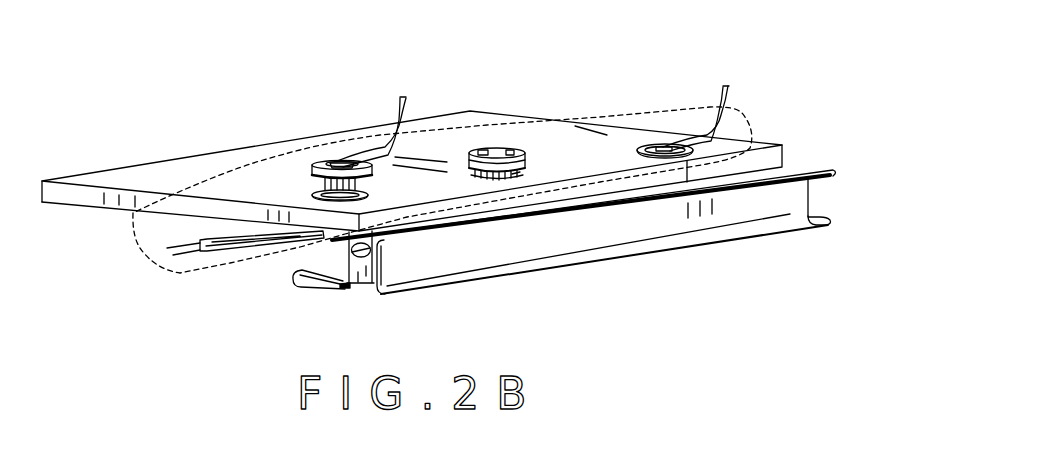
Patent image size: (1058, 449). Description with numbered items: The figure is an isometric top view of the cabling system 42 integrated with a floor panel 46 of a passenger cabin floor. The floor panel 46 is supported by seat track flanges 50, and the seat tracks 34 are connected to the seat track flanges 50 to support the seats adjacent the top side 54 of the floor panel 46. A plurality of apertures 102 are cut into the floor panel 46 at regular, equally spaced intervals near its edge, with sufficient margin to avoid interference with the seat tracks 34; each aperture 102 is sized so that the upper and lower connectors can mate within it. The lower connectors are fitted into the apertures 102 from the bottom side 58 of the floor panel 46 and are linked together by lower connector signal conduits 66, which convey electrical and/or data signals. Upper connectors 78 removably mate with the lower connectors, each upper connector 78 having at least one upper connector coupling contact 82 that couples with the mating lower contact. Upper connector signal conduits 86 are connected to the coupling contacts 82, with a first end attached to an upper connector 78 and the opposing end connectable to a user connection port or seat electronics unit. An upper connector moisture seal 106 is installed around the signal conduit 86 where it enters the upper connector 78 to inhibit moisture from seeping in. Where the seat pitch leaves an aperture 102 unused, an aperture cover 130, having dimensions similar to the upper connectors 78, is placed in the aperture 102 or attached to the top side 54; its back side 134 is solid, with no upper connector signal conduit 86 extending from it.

The seat track 34 is at (366, 280).
The cabling system 42 is at (143, 252).
The floor panel 46 is at (440, 123).
The seat track flange 50 is at (325, 279).
The top side 54 is at (115, 190).
The bottom side 58 is at (100, 210).
The lower connector signal conduit 66 is at (248, 252).
The upper connector 78 is at (313, 166).
The upper connector coupling contact 82 is at (315, 194).
The upper connector signal conduit 86 is at (400, 103).
The aperture 102 is at (512, 174).
The upper connector moisture seal 106 is at (352, 166).
The aperture cover 130 is at (480, 148).
The back side 134 is at (505, 150).